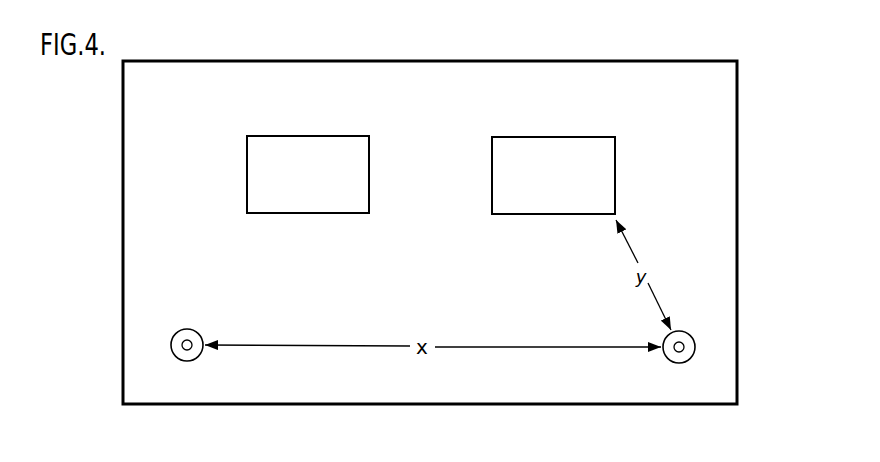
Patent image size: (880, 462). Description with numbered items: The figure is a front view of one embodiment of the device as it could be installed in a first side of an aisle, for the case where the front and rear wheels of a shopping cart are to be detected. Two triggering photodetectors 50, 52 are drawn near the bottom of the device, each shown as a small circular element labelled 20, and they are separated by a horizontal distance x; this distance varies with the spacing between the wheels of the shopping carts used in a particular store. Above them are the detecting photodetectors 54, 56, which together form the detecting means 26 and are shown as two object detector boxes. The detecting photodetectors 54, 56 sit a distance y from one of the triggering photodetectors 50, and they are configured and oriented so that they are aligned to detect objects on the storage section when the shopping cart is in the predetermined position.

The wheel / sensor location 20 is at (435, 379).
The detecting means 26 is at (441, 186).
The triggering photodetector 50 is at (703, 342).
The triggering photodetector 52 is at (167, 339).
The detecting photodetector 54 is at (624, 163).
The detecting photodetector 56 is at (237, 155).